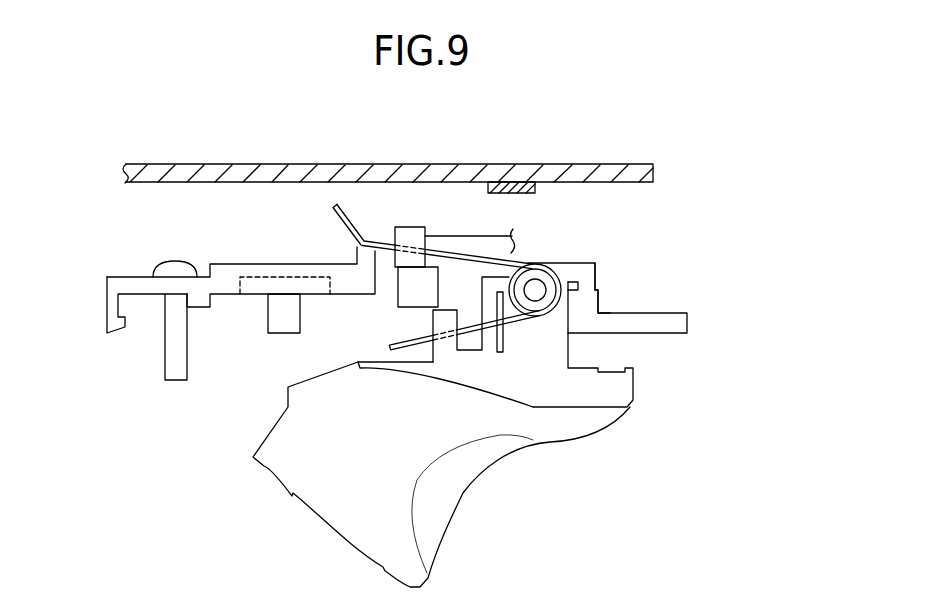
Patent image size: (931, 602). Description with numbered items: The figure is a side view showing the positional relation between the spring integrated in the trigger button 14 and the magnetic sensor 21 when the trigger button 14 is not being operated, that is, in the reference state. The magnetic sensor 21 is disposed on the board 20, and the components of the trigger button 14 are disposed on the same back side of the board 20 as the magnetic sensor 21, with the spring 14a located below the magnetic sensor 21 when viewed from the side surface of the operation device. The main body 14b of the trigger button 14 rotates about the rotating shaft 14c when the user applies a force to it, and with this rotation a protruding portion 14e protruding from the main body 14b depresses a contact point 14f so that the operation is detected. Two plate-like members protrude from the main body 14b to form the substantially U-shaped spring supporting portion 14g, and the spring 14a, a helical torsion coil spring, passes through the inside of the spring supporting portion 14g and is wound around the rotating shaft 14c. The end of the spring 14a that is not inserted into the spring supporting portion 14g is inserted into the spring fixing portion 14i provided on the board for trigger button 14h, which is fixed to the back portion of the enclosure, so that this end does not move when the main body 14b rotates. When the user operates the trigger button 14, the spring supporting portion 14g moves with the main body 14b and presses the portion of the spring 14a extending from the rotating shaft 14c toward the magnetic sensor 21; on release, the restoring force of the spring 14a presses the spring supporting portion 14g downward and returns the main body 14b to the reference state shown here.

The board 20 is at (607, 164).
The magnetic sensor 21 is at (537, 192).
The trigger button 14 is at (583, 458).
The spring 14a is at (352, 219).
The main body 14b is at (445, 488).
The rotating shaft 14c is at (535, 290).
The protruding portion 14e is at (597, 284).
The contact point 14f is at (598, 299).
The spring supporting portion 14g is at (448, 310).
The board for trigger button 14h is at (247, 264).
The spring fixing portion 14i is at (418, 227).